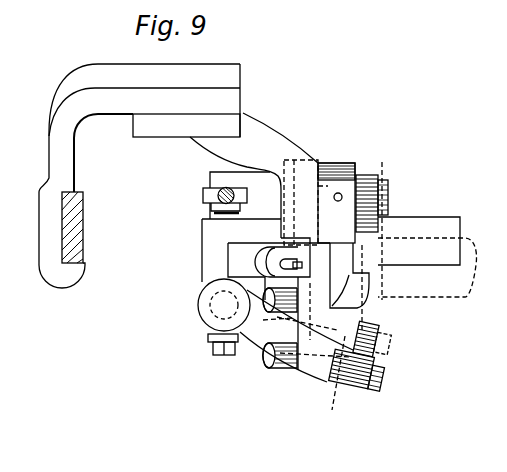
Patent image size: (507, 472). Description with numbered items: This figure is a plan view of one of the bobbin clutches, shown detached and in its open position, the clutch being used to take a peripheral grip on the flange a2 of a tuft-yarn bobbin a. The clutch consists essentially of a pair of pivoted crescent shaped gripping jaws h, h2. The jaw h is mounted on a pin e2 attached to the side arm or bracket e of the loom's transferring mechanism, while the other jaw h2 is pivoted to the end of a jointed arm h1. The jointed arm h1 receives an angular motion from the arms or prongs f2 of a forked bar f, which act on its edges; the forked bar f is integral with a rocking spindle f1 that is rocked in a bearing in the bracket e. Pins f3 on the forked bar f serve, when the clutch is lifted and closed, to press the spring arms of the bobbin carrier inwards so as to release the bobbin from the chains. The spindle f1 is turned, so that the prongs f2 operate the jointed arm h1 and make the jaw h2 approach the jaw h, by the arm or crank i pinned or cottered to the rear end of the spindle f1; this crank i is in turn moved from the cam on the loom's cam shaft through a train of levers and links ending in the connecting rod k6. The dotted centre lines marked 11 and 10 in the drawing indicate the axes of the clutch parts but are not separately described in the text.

The side arm or bracket e is at (178, 176).
The arm or crank i is at (210, 177).
The link or connecting rod k6 is at (205, 197).
The rocking spindle f1 is at (290, 210).
The pin f3 is at (296, 258).
The pin e2 is at (355, 203).
The center line 11 is at (384, 225).
The crescent shaped jaw h is at (379, 191).
The bobbin a is at (462, 297).
The flange a2 is at (378, 308).
The forked bar f is at (307, 303).
The arm or prong f2 is at (246, 372).
The jointed arm h1 is at (317, 373).
The crescent shaped jaw h2 is at (374, 356).
The gear 10 is at (354, 375).